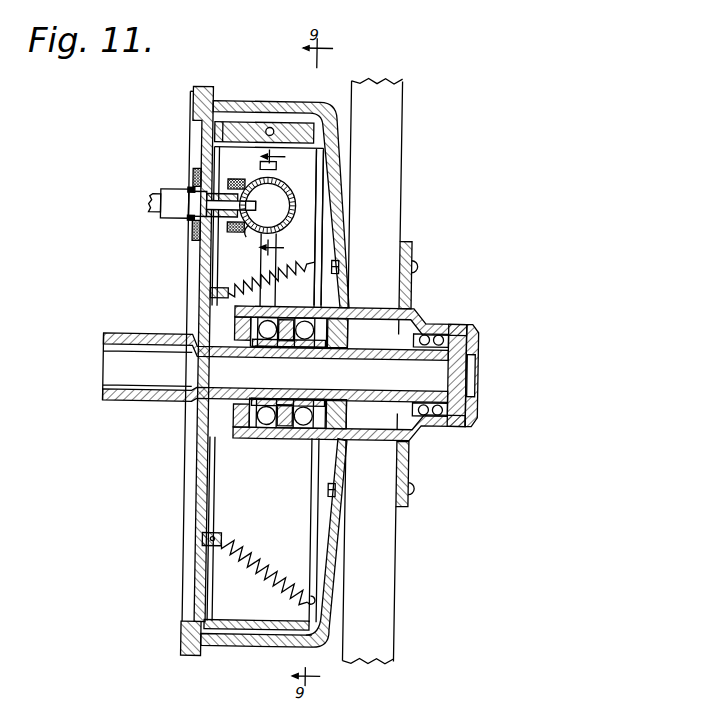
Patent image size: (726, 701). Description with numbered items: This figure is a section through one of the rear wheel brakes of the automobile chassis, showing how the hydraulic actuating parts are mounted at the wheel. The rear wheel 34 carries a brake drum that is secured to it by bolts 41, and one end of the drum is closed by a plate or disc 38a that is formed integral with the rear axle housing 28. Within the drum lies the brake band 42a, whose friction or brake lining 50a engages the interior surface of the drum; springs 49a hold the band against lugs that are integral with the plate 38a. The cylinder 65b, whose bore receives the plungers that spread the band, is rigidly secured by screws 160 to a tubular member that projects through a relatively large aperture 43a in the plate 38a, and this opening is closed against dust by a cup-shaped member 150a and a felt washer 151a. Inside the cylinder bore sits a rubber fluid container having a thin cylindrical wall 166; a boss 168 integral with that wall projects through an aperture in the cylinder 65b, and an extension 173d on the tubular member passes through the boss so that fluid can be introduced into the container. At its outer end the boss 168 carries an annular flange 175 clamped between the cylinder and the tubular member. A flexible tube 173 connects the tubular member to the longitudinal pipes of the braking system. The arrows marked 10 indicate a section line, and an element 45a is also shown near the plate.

The section line / pin rod 10 is at (281, 228).
The rear axle housing 28 is at (125, 404).
The rear wheels 34 is at (386, 164).
The plate or disc 38a is at (213, 272).
The bolts 41 is at (414, 268).
The brake band 42a is at (250, 622).
The aperture 43a is at (196, 236).
The inner plate 45a is at (212, 597).
The springs 49a is at (272, 552).
The friction or brake linings 50a is at (293, 632).
The cylinder 65b is at (312, 228).
The cup-shaped member 150a is at (198, 170).
The felt washer 151a is at (196, 182).
The screws 160 is at (245, 234).
The cylindrical wall 166 is at (286, 182).
The boss 168 is at (236, 178).
The flexible tubes 173 is at (146, 206).
The extension 173d is at (264, 207).
The annular flange 175 is at (240, 186).